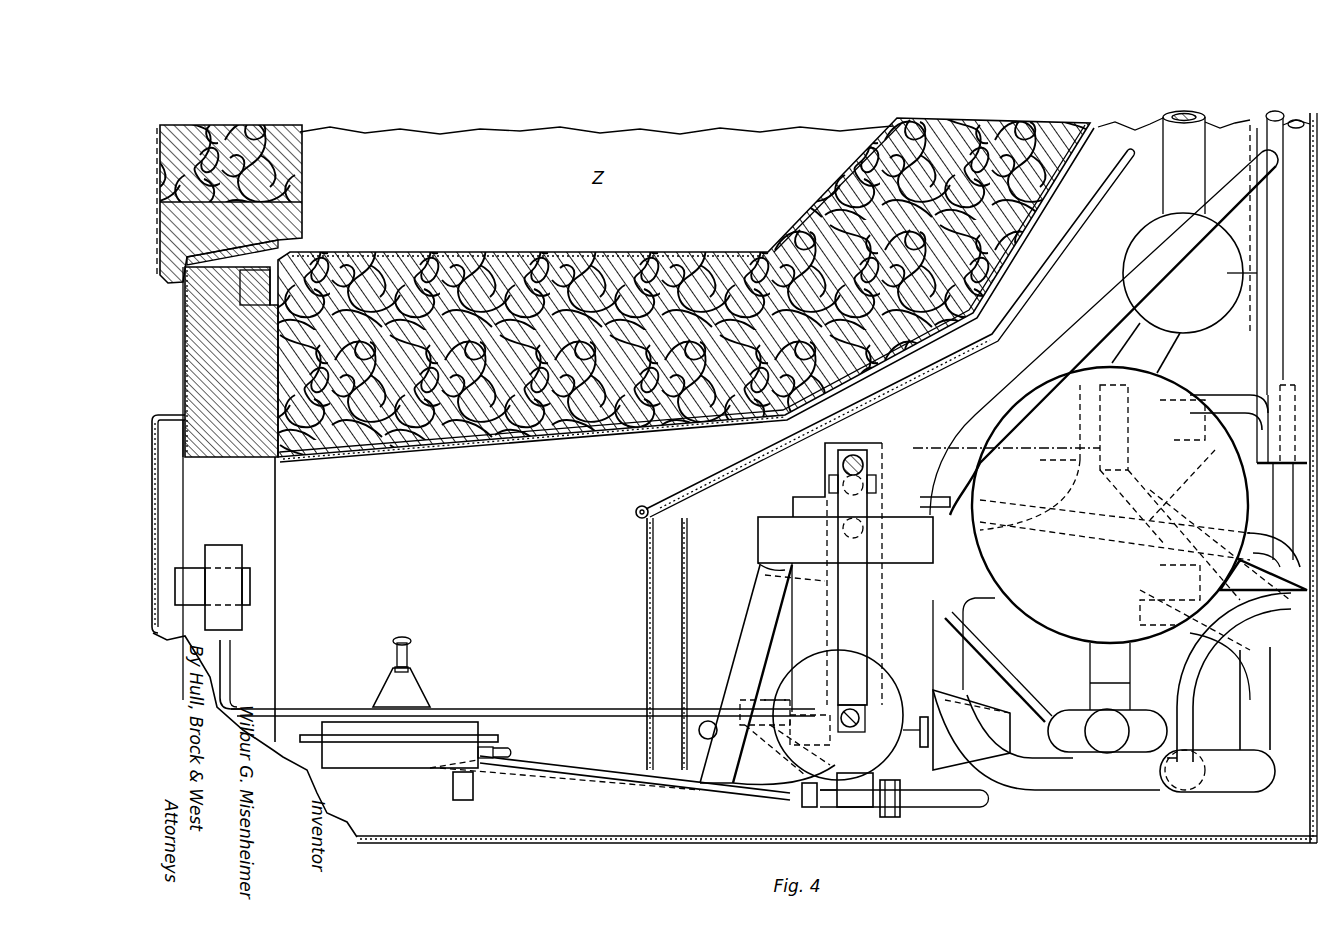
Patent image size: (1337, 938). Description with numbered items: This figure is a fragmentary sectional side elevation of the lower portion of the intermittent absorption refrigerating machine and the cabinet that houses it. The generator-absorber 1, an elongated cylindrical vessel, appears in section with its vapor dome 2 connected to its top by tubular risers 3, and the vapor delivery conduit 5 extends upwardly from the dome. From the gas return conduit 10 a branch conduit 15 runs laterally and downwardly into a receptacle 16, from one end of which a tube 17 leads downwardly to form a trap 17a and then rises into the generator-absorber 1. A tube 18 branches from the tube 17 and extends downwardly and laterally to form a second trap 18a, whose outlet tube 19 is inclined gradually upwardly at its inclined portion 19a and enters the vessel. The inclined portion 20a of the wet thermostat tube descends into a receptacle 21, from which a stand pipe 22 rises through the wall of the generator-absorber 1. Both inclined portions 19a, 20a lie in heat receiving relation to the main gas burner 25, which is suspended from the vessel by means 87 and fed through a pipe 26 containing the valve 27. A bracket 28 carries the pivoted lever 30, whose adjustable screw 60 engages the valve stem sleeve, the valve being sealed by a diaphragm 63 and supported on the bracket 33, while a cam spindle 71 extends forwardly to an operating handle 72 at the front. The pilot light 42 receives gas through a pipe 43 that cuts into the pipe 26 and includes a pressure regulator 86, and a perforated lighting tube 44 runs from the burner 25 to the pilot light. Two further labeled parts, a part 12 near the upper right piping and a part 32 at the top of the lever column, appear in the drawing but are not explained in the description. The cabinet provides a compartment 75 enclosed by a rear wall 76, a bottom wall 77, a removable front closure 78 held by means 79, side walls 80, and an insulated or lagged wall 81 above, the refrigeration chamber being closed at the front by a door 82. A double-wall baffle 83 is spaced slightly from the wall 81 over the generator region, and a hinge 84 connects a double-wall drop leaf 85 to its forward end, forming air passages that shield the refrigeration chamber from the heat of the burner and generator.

The generator-absorber 1 is at (1110, 505).
The vapor dome 2 is at (1143, 243).
The tubular risers 3 is at (1146, 348).
The vapor delivery conduit 5 is at (1170, 181).
The gas return conduit 10 is at (1275, 272).
The vertical pipe 12 is at (1182, 634).
The branch conduit 15 is at (1100, 297).
The receptacle 16 is at (765, 543).
The tube 17 is at (748, 620).
The trap 17a is at (826, 744).
The tube 18 is at (985, 650).
The trap 18a is at (1120, 786).
The tube 19 is at (1173, 412).
The inclined portion of tube 19a is at (1196, 682).
The inclined portion of tube 20a is at (1088, 510).
The receptacle 21 is at (1234, 780).
The stand pipe 22 is at (1263, 718).
The gas burner 25 is at (1075, 710).
The pipe 26 is at (706, 722).
The valve 27 is at (808, 700).
The bracket 28 is at (835, 486).
The lever 30 is at (840, 596).
The pivot screw 32 is at (842, 467).
The bracket 33 is at (900, 450).
The pilot light 42 is at (760, 578).
The pipe 43 is at (633, 770).
The perforated lighting tube 44 is at (1020, 668).
The screw 60 is at (864, 714).
The diaphragm 63 is at (882, 672).
The square spindle 71 is at (583, 708).
The operating handle 72 is at (228, 675).
The compartment 75 is at (487, 822).
The rear wall 76 is at (1316, 684).
The bottom wall 77 is at (1045, 836).
The removable closure 78 is at (160, 492).
The holding means 79 is at (235, 585).
The side walls 80 is at (401, 599).
The insulated or lagged wall 81 is at (590, 445).
The door 82 is at (283, 165).
The double-wall partition or baffle 83 is at (722, 472).
The hinge 84 is at (636, 512).
The drop leaf 85 is at (657, 602).
The pressure regulator 86 is at (410, 752).
The suspending means 87 is at (1104, 648).